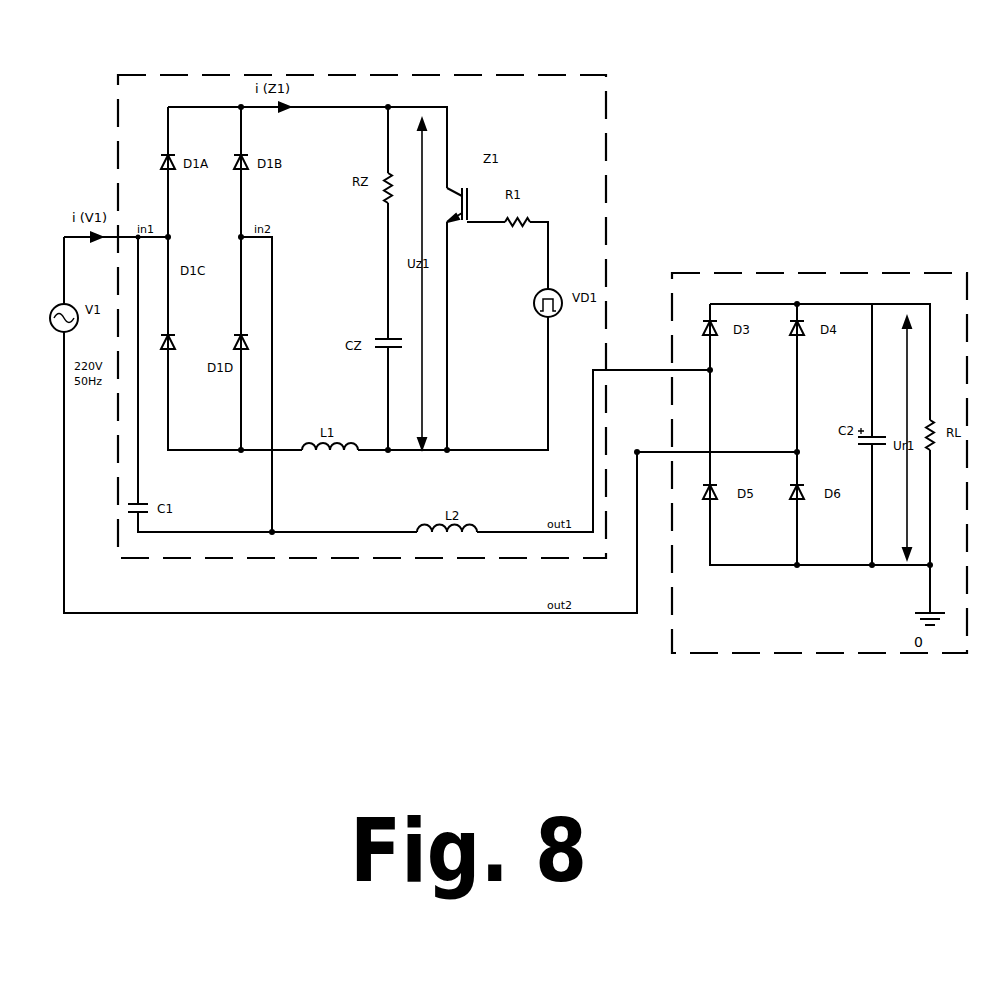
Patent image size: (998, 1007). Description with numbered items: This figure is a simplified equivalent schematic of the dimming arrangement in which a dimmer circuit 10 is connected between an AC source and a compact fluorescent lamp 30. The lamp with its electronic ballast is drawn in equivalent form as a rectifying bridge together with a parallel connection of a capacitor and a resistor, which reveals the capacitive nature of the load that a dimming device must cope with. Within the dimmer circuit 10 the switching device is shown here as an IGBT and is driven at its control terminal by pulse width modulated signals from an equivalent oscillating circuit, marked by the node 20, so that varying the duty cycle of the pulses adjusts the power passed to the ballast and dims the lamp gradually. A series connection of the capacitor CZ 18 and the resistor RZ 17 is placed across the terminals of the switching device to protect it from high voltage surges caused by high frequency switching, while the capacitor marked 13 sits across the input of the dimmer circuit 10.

The dimmer circuit 10 is at (362, 300).
The compact fluorescent lamp 30 is at (819, 448).
The capacitor C1 13 is at (142, 499).
The resistor RZ 17 is at (378, 193).
The capacitor CZ 18 is at (384, 335).
The control signal source VD1 node 20 is at (559, 264).